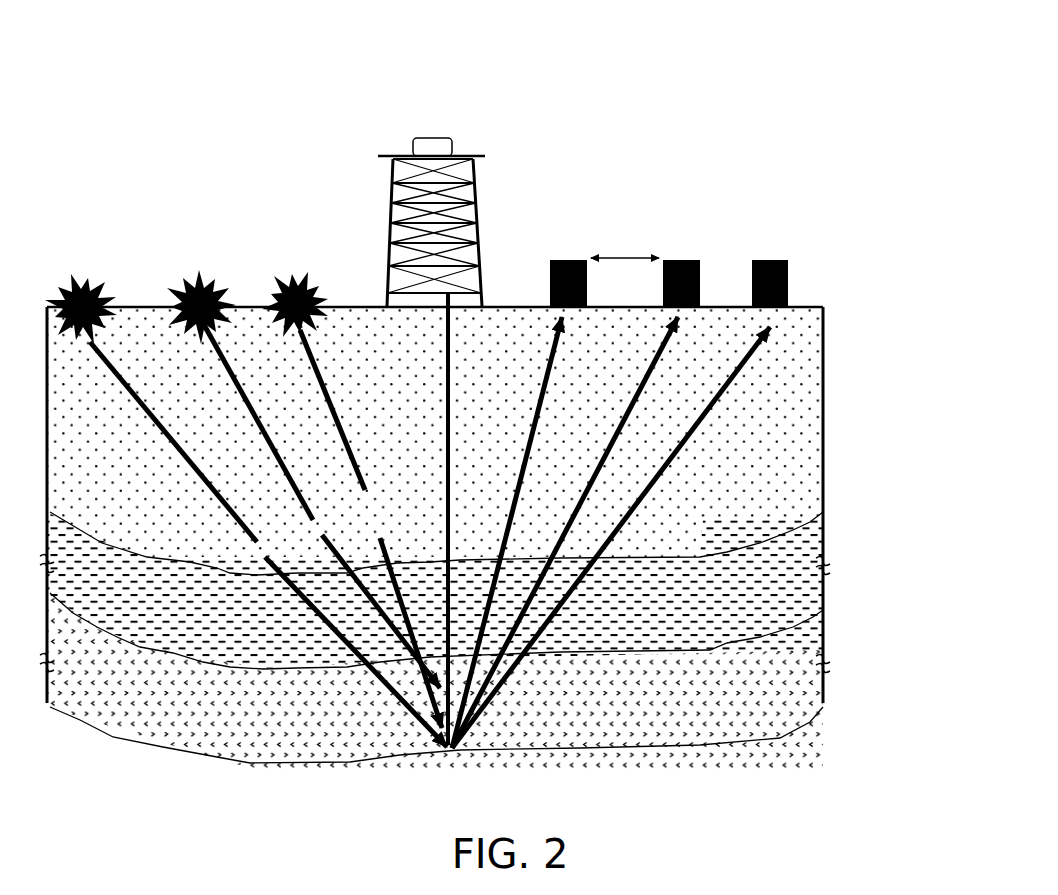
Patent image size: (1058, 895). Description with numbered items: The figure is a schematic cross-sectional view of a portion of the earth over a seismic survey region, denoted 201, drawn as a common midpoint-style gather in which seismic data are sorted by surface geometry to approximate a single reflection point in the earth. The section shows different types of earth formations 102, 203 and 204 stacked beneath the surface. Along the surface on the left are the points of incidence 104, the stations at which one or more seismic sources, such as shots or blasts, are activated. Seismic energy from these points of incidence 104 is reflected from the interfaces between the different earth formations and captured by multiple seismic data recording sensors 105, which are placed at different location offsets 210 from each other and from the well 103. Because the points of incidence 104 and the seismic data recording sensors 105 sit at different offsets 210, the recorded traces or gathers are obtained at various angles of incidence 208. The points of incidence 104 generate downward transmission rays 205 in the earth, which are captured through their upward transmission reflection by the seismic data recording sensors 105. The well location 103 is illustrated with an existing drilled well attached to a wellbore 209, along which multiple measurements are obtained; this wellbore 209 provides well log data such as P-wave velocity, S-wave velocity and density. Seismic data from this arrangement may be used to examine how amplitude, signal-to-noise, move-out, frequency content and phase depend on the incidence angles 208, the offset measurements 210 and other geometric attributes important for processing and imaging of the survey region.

The cross-sectional view of a portion of the earth 201 is at (595, 45).
The earth formation 102 is at (783, 370).
The well 103 is at (477, 167).
The points of incidence 104 is at (50, 265).
The seismic data recording sensors 105 is at (765, 240).
The earth formation 203 is at (783, 503).
The earth formation 204 is at (788, 597).
The downward transmission rays 205 is at (395, 600).
The angles of incidence 208 is at (440, 482).
The wellbore 209 is at (450, 372).
The offsets 210 is at (625, 269).